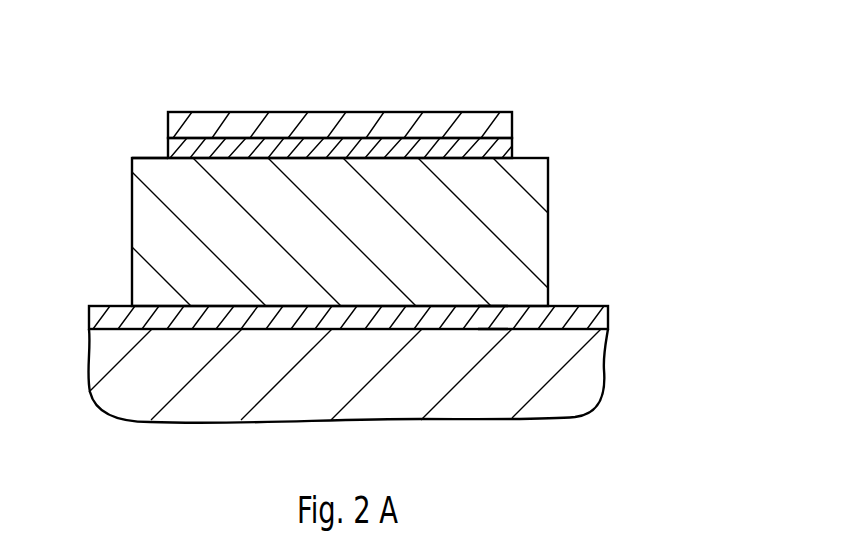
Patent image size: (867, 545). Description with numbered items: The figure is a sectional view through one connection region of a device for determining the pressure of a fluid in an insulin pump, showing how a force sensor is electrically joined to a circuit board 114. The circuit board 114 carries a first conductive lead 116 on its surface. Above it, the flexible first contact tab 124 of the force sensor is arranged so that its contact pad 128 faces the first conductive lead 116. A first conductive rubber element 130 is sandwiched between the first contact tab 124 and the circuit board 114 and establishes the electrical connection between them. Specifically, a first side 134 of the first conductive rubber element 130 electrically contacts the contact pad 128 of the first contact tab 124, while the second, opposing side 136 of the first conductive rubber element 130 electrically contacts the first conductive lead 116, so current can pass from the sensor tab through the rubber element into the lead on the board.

The circuit board 114 is at (648, 315).
The first conductive lead 116 is at (590, 313).
The first contact tab 124 is at (468, 100).
The contact pad 128 is at (503, 152).
The first conductive rubber element 130 is at (147, 223).
The first side 134 is at (148, 147).
The second, opposing side 136 is at (498, 309).